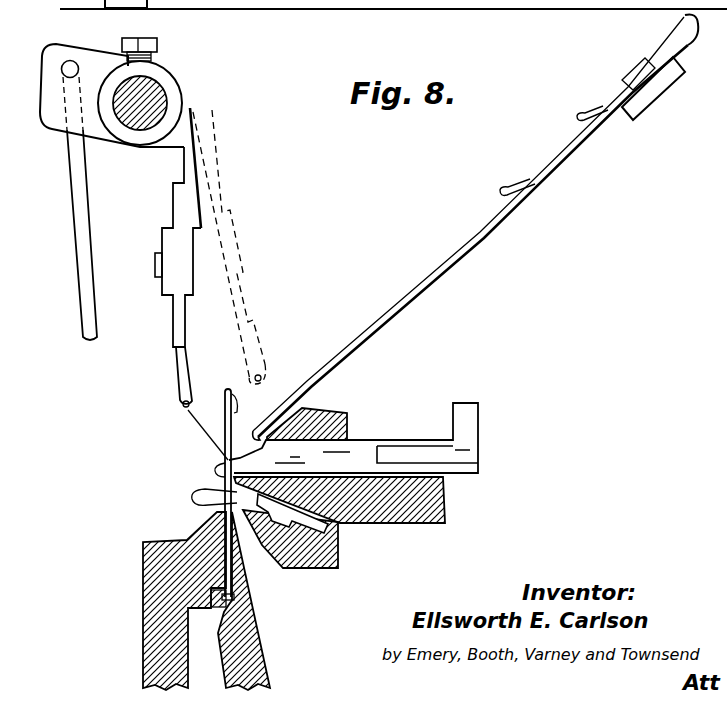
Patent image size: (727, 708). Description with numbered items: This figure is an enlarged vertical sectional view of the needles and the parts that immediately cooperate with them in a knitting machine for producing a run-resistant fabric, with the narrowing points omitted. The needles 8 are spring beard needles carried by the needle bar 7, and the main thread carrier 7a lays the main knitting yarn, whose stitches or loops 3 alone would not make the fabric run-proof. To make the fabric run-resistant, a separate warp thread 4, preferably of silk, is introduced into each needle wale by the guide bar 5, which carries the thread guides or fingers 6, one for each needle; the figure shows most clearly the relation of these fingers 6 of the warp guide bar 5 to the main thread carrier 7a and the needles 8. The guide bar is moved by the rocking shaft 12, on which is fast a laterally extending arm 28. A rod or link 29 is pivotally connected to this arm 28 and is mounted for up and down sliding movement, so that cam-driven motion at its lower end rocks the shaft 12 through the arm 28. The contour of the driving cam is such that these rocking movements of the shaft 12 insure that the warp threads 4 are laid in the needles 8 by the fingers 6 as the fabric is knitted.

The arm 28 is at (50, 80).
The shaft 12 is at (163, 88).
The rod or link 29 is at (79, 225).
The guide bar 5 is at (179, 304).
The thread guides 6 is at (178, 375).
The needles 8 is at (230, 389).
The warp threads 4 is at (208, 437).
The stitches or loops of main knitting yarn 3 is at (233, 457).
The main thread carrier 7a is at (390, 317).
The needle bar 7 is at (150, 541).